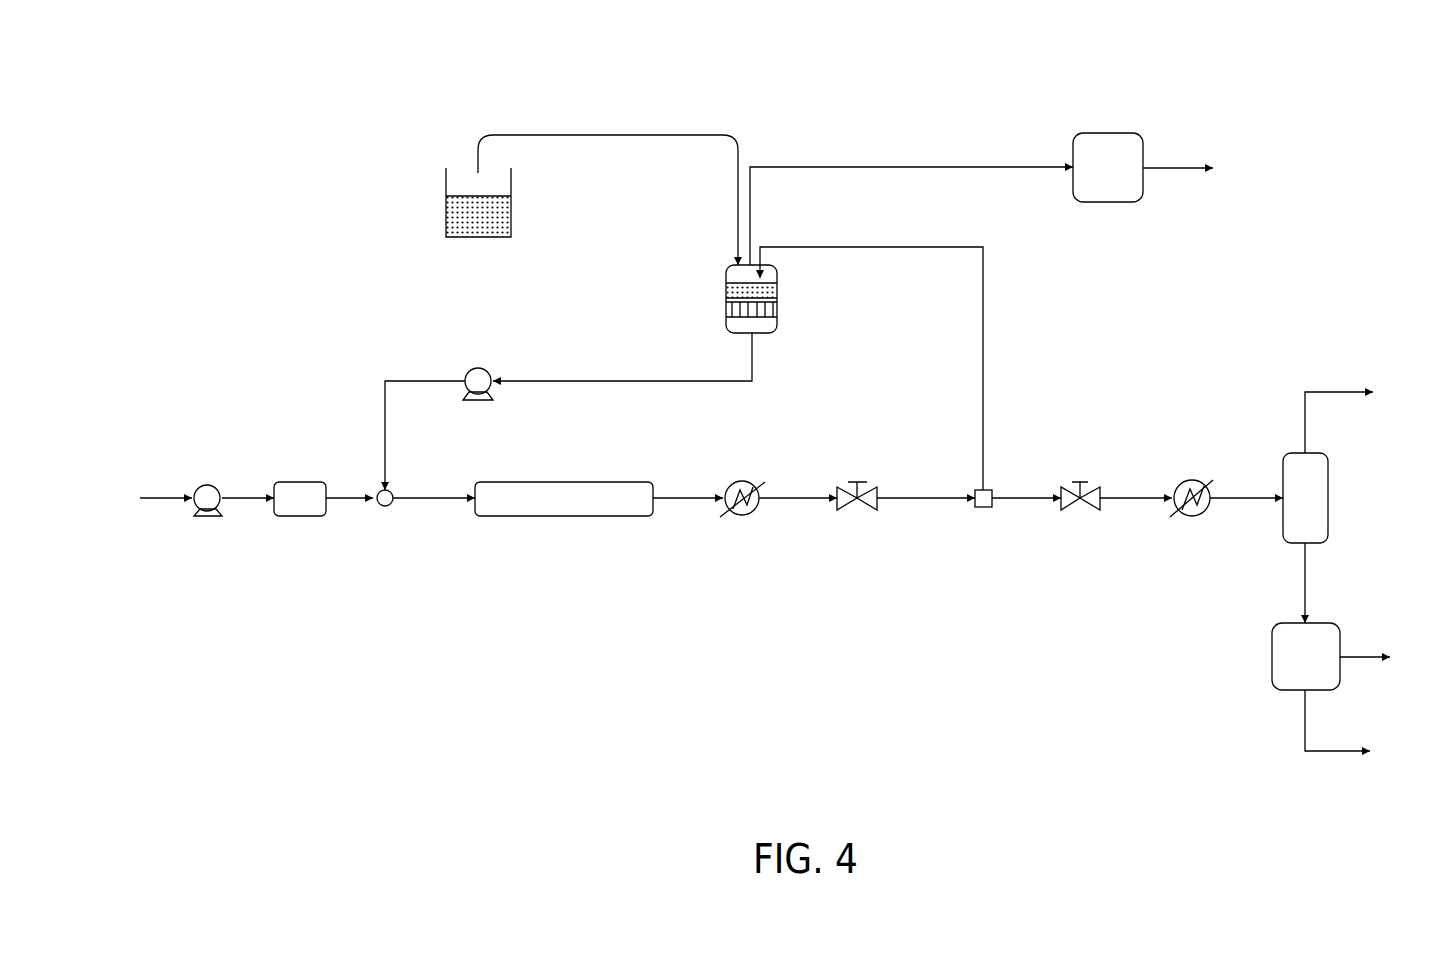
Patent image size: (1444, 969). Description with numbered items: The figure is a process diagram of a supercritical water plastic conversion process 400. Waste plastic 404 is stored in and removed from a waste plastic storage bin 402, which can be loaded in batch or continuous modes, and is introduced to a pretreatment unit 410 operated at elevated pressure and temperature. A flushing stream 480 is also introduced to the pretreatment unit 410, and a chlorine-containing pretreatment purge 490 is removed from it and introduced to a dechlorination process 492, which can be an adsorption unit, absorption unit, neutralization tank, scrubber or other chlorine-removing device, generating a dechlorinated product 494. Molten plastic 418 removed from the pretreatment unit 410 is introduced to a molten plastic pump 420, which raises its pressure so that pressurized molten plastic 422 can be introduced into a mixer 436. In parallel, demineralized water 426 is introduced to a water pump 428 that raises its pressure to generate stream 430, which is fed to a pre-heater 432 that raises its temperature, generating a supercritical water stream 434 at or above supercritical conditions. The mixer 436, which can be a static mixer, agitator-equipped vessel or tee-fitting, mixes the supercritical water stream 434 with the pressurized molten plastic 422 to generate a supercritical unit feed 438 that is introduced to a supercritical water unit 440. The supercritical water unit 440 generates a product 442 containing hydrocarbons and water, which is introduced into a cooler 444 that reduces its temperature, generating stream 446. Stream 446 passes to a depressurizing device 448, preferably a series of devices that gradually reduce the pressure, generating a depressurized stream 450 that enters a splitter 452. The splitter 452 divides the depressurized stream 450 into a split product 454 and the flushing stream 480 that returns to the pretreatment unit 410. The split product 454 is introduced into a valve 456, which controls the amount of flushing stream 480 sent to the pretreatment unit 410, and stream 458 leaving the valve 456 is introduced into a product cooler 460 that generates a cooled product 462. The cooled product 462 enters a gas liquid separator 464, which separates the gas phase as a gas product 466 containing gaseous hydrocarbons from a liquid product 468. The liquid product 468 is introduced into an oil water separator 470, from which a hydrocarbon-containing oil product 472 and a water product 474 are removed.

The supercritical water plastic conversion process 400 is at (337, 88).
The waste plastic storage bin 402 is at (446, 186).
The waste plastic 404 is at (602, 135).
The pretreatment unit 410 is at (726, 292).
The molten plastic 418 is at (622, 381).
The molten plastic pump 420 is at (472, 368).
The pressurized molten plastic 422 is at (383, 400).
The water 426 is at (170, 503).
The water pump 428 is at (205, 485).
The stream 430 is at (252, 503).
The pre-heater 432 is at (300, 482).
The supercritical water stream 434 is at (350, 503).
The mixer 436 is at (386, 508).
The supercritical unit feed 438 is at (435, 498).
The supercritical water unit 440 is at (560, 516).
The product 442 is at (678, 498).
The cooler 444 is at (748, 516).
The stream 446 is at (793, 498).
The depressurizing device 448 is at (866, 511).
The depressurized stream 450 is at (895, 498).
The splitter 452 is at (985, 510).
The split product 454 is at (1018, 498).
The valve 456 is at (1082, 482).
The stream 458 is at (1130, 503).
The product cooler 460 is at (1199, 516).
The cooled product 462 is at (1245, 498).
The gas liquid separator 464 is at (1328, 478).
The gas product 466 is at (1331, 392).
The liquid product 468 is at (1308, 577).
The oil water separator 470 is at (1272, 656).
The oil product 472 is at (1363, 657).
The water product 474 is at (1332, 751).
The flushing stream 480 is at (983, 317).
The pretreatment purge 490 is at (887, 167).
The dechlorination process 492 is at (1106, 133).
The dechlorinated product 494 is at (1170, 168).